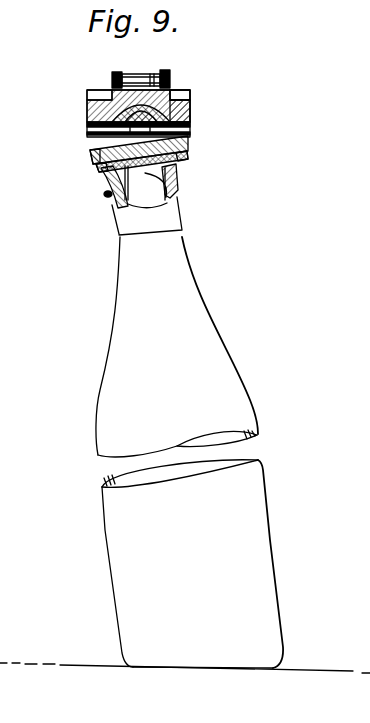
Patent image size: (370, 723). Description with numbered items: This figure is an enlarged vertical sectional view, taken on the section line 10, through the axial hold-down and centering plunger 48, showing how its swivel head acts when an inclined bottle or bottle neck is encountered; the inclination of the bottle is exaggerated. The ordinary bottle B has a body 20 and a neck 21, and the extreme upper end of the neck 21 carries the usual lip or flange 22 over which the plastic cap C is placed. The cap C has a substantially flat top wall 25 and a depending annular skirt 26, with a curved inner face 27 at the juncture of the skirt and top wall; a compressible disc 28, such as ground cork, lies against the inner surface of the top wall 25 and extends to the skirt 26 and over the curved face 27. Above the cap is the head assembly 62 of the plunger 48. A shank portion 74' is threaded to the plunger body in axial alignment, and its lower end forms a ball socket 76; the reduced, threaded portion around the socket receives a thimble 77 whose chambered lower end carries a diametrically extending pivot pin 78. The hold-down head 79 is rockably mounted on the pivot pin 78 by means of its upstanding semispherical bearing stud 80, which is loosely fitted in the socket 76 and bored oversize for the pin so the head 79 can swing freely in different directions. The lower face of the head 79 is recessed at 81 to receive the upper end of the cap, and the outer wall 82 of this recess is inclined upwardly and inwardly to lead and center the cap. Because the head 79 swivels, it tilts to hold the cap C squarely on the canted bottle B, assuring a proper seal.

The section line 10 is at (148, 53).
The body 20 is at (252, 500).
The neck 21 is at (182, 238).
The lip or flange 22 is at (110, 190).
The top wall 25 is at (128, 203).
The annular skirt 26 is at (187, 177).
The curved inner face 27 is at (106, 177).
The compressible disc 28 is at (176, 187).
The axial hold-down plunger 48 is at (163, 77).
The head assembly 62 is at (180, 110).
The shank portion 74' is at (152, 66).
The ball socket 76 is at (112, 80).
The thimble 77 is at (190, 95).
The pivot pin 78 is at (190, 128).
The hold-down head 79 is at (188, 151).
The semispherical bearing stud 80 is at (170, 90).
The recess 81 is at (92, 154).
The outer wall of recess 82 is at (100, 174).
The bottle B is at (204, 344).
The plastic cap C is at (187, 168).